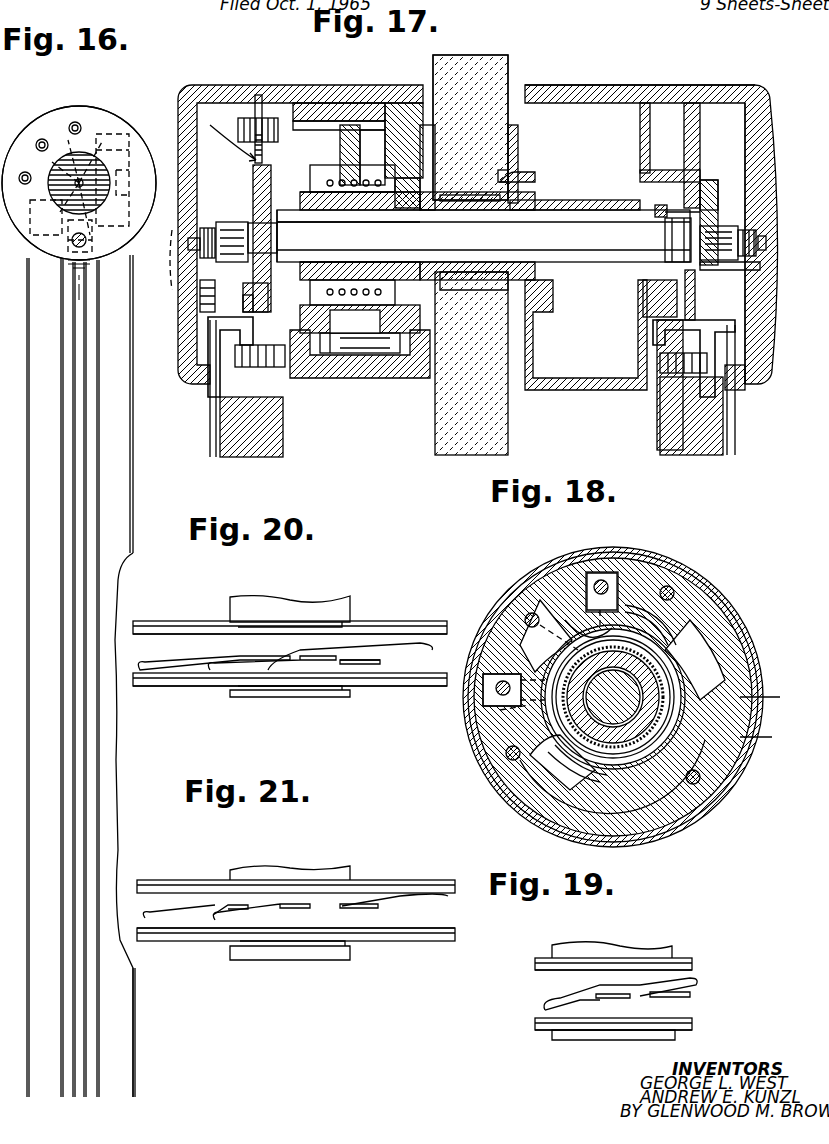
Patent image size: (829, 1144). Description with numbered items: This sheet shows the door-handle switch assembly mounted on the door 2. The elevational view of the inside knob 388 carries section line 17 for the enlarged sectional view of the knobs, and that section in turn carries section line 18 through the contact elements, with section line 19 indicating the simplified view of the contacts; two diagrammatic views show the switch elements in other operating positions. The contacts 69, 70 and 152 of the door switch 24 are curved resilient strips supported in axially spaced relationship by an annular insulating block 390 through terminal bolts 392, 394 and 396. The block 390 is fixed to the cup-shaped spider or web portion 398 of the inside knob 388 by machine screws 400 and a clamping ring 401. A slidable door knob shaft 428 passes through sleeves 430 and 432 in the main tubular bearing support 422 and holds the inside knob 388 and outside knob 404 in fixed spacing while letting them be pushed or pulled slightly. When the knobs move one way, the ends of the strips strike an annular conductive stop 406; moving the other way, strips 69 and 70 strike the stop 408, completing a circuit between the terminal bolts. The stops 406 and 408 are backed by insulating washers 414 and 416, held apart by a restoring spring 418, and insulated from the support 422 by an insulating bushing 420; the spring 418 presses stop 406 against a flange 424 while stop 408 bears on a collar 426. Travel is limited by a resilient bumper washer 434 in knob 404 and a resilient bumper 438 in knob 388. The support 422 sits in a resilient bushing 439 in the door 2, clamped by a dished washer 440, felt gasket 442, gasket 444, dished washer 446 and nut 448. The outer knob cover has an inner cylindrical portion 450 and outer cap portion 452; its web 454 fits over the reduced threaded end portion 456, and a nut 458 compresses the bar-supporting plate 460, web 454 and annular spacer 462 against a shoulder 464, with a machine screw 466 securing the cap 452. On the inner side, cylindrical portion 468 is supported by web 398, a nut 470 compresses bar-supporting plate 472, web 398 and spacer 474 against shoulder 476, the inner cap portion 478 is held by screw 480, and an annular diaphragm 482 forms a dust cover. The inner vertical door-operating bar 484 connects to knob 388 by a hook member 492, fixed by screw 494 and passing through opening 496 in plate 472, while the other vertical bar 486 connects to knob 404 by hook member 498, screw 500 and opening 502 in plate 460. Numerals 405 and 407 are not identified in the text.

In FIG. 17, the door 2 is at (482, 70).
In FIG. 16, the section line 17— 17 is at (79, 95).
In FIG. 17, the section line 18— 18 is at (328, 76).
In FIG. 18, the section line 19— 19 is at (643, 598).
In FIG. 17, the door switch 24 is at (220, 120).
In FIG. 17, the contact strip 69 is at (350, 130).
In FIG. 18, the contact strip 69 is at (590, 618).
In FIG. 20, the contact strip 69 is at (360, 676).
In FIG. 21, the contact strip 69 is at (352, 904).
In FIG. 19, the contact strip 69 is at (655, 995).
In FIG. 17, the center contact strip 70 is at (356, 160).
In FIG. 18, the center contact strip 70 is at (540, 642).
In FIG. 20, the center contact strip 70 is at (300, 656).
In FIG. 21, the center contact strip 70 is at (290, 905).
In FIG. 19, the center contact strip 70 is at (620, 992).
In FIG. 18, the contact strip 152 is at (495, 730).
In FIG. 20, the contact strip 152 is at (235, 655).
In FIG. 21, the contact strip 152 is at (226, 905).
In FIG. 19, the contact strip 152 is at (574, 995).
In FIG. 16, the inside knob 388 is at (105, 107).
In FIG. 17, the inside knob 388 is at (219, 72).
In FIG. 18, the inside knob 388 is at (675, 546).
In FIG. 17, the annular insulating block 390 is at (348, 378).
In FIG. 18, the annular insulating block 390 is at (720, 768).
In FIG. 16, the terminal bolt 392 is at (73, 122).
In FIG. 17, the terminal bolt 392 is at (305, 130).
In FIG. 18, the terminal bolt 392 is at (604, 582).
In FIG. 16, the terminal bolt 394 is at (42, 139).
In FIG. 18, the terminal bolt 394 is at (527, 612).
In FIG. 16, the terminal bolt 396 is at (25, 172).
In FIG. 18, the terminal bolt 396 is at (500, 712).
In FIG. 17, the spider or web portion 398 is at (256, 162).
In FIG. 17, the machine screws 400 is at (251, 420).
In FIG. 18, the machine screws 400 is at (678, 590).
In FIG. 17, the clamping ring 401 is at (378, 120).
In FIG. 17, the outside knob 404 is at (718, 74).
In FIG. 18, the spring 405 is at (660, 605).
In FIG. 20, the spring 405 is at (430, 640).
In FIG. 21, the spring 405 is at (438, 893).
In FIG. 19, the spring 405 is at (700, 985).
In FIG. 17, the annular conductive stop or washer 406 is at (300, 160).
In FIG. 20, the annular conductive stop or washer 406 is at (398, 678).
In FIG. 21, the annular conductive stop or washer 406 is at (436, 941).
In FIG. 19, the annular conductive stop or washer 406 is at (692, 1018).
In FIG. 18, the spring 407 is at (560, 765).
In FIG. 20, the spring 407 is at (156, 680).
In FIG. 21, the spring 407 is at (156, 928).
In FIG. 19, the spring 407 is at (530, 1005).
In FIG. 17, the annular conductive stop or washer 408 is at (340, 212).
In FIG. 18, the annular conductive stop or washer 408 is at (588, 765).
In FIG. 20, the annular conductive stop or washer 408 is at (185, 634).
In FIG. 21, the annular conductive stop or washer 408 is at (160, 882).
In FIG. 19, the annular conductive stop or washer 408 is at (535, 968).
In FIG. 17, the insulating washer 414 is at (312, 185).
In FIG. 20, the insulating washer 414 is at (396, 686).
In FIG. 19, the insulating washer 414 is at (692, 1030).
In FIG. 17, the insulating washer 416 is at (392, 210).
In FIG. 20, the insulating washer 416 is at (186, 624).
In FIG. 19, the insulating washer 416 is at (538, 958).
In FIG. 17, the restoring spring 418 is at (348, 292).
In FIG. 18, the restoring spring 418 is at (672, 655).
In FIG. 17, the insulating bushing 420 is at (345, 188).
In FIG. 18, the insulating bushing 420 is at (672, 737).
In FIG. 17, the main tubular bearing support 422 is at (568, 205).
In FIG. 18, the main tubular bearing support 422 is at (680, 697).
In FIG. 17, the flange 424 is at (310, 290).
In FIG. 20, the flange 424 is at (292, 692).
In FIG. 21, the flange 424 is at (296, 962).
In FIG. 19, the flange 424 is at (610, 1036).
In FIG. 17, the collar 426 is at (420, 210).
In FIG. 20, the collar 426 is at (250, 598).
In FIG. 21, the collar 426 is at (272, 865).
In FIG. 19, the collar 426 is at (594, 948).
In FIG. 17, the slidable door knob shaft 428 is at (566, 262).
In FIG. 18, the slidable door knob shaft 428 is at (620, 760).
In FIG. 17, the sleeve 430 is at (600, 260).
In FIG. 17, the sleeve 432 is at (370, 262).
In FIG. 18, the sleeve 432 is at (640, 765).
In FIG. 17, the resilient bumper washer 434 is at (668, 215).
In FIG. 17, the resilient bumper 438 is at (290, 215).
In FIG. 17, the resilient bushing 439 is at (450, 282).
In FIG. 17, the dished washer 440 is at (436, 366).
In FIG. 17, the felt gasket 442 is at (455, 195).
In FIG. 17, the gasket 444 is at (504, 170).
In FIG. 17, the dished washer 446 is at (508, 137).
In FIG. 17, the nut 448 is at (540, 182).
In FIG. 17, the inner cylindrical portion 450 is at (600, 90).
In FIG. 17, the outer cap portion 452 is at (745, 355).
In FIG. 17, the partition or web 454 is at (684, 118).
In FIG. 17, the reduced threaded end portion 456 is at (700, 210).
In FIG. 17, the nut 458 is at (722, 226).
In FIG. 17, the bar-supporting plate 460 is at (692, 200).
In FIG. 17, the annular spacer 462 is at (660, 207).
In FIG. 17, the shoulder 464 is at (665, 243).
In FIG. 17, the machine screw 466 is at (740, 262).
In FIG. 17, the cylindrical portion 468 is at (300, 90).
In FIG. 18, the cylindrical portion 468 is at (710, 790).
In FIG. 17, the nut 470 is at (232, 222).
In FIG. 17, the bar-supporting plate 472 is at (253, 178).
In FIG. 17, the annular spacer 474 is at (245, 290).
In FIG. 17, the shoulder 476 is at (310, 228).
In FIG. 16, the inner cap portion 478 is at (24, 220).
In FIG. 17, the inner cap portion 478 is at (215, 310).
In FIG. 16, the screw 480 is at (90, 208).
In FIG. 17, the screw 480 is at (186, 242).
In FIG. 17, the annular diaphragm 482 is at (420, 118).
In FIG. 16, the inner vertical door-operating bar 484 is at (133, 1070).
In FIG. 17, the inner vertical door-operating bar 484 is at (232, 432).
In FIG. 17, the vertical bar 486 is at (715, 432).
In FIG. 16, the hook member 492 is at (66, 237).
In FIG. 17, the hook member 492 is at (215, 340).
In FIG. 16, the screw 494 is at (66, 250).
In FIG. 17, the screw 494 is at (212, 362).
In FIG. 16, the opening 496 is at (66, 212).
In FIG. 17, the opening 496 is at (245, 298).
In FIG. 17, the hook member 498 is at (718, 313).
In FIG. 17, the screw 500 is at (742, 385).
In FIG. 17, the opening 502 is at (692, 285).